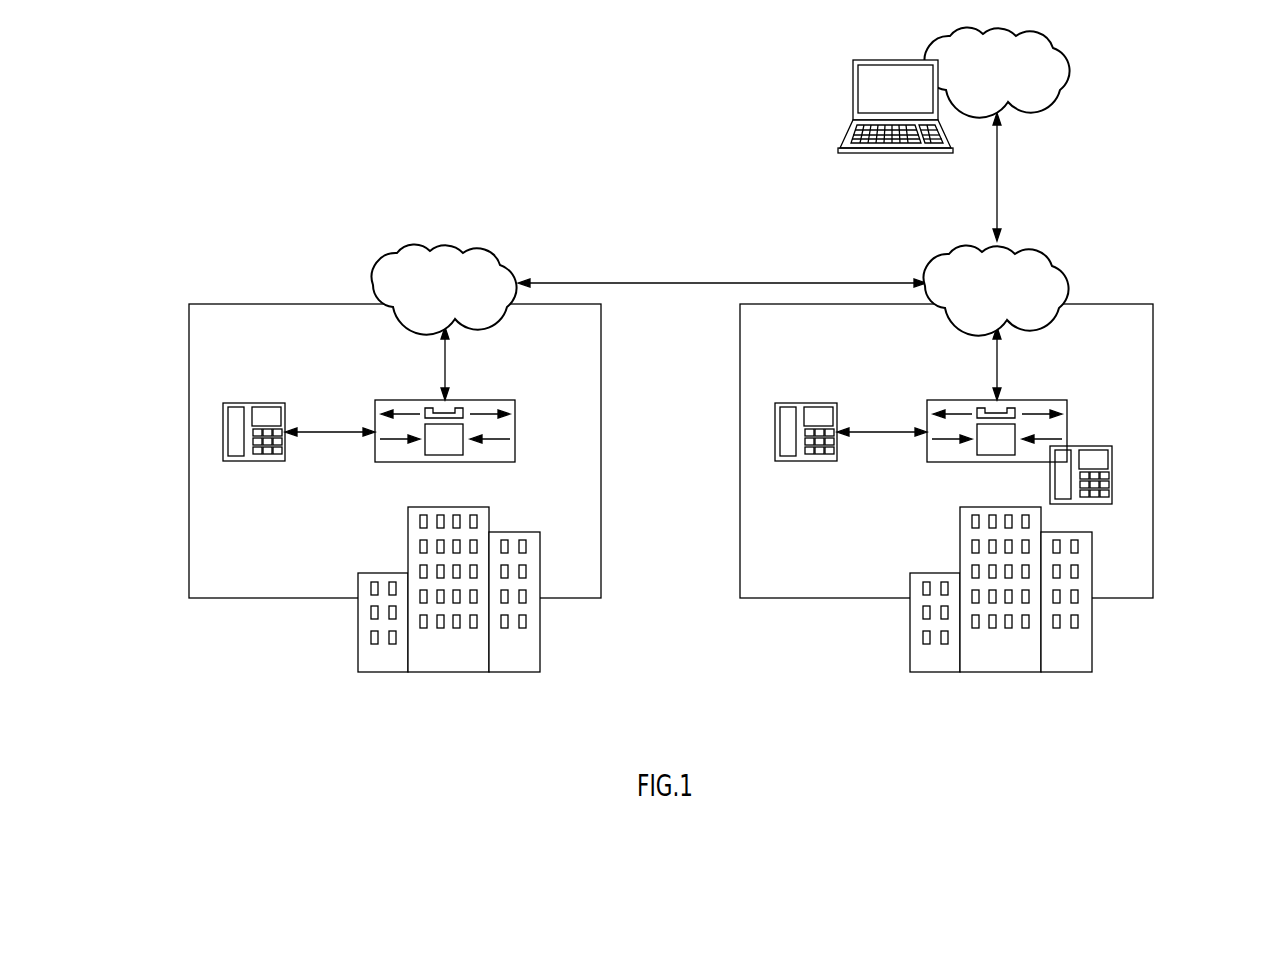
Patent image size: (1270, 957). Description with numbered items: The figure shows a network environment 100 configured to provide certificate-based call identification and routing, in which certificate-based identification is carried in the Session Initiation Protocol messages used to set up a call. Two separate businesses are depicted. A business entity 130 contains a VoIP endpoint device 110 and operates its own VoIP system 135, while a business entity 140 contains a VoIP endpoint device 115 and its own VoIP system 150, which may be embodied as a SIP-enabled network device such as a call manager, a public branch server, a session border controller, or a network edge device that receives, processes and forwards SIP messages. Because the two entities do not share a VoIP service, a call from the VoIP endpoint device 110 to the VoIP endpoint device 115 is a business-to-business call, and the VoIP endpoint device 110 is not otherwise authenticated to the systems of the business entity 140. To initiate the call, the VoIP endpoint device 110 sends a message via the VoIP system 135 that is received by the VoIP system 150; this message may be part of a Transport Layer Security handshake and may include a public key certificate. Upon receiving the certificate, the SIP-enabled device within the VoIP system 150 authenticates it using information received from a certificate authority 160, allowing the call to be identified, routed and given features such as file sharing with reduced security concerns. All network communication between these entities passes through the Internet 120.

The network environment 100 is at (614, 113).
The VoIP endpoint device 110 is at (254, 403).
The VoIP endpoint device 115 is at (808, 403).
The Internet 120 is at (507, 262).
The business entity 130 is at (188, 347).
The VoIP system 135 is at (498, 400).
The business entity 140 is at (1153, 354).
The VoIP system 150 is at (1053, 400).
The certificate authority 160 is at (853, 90).